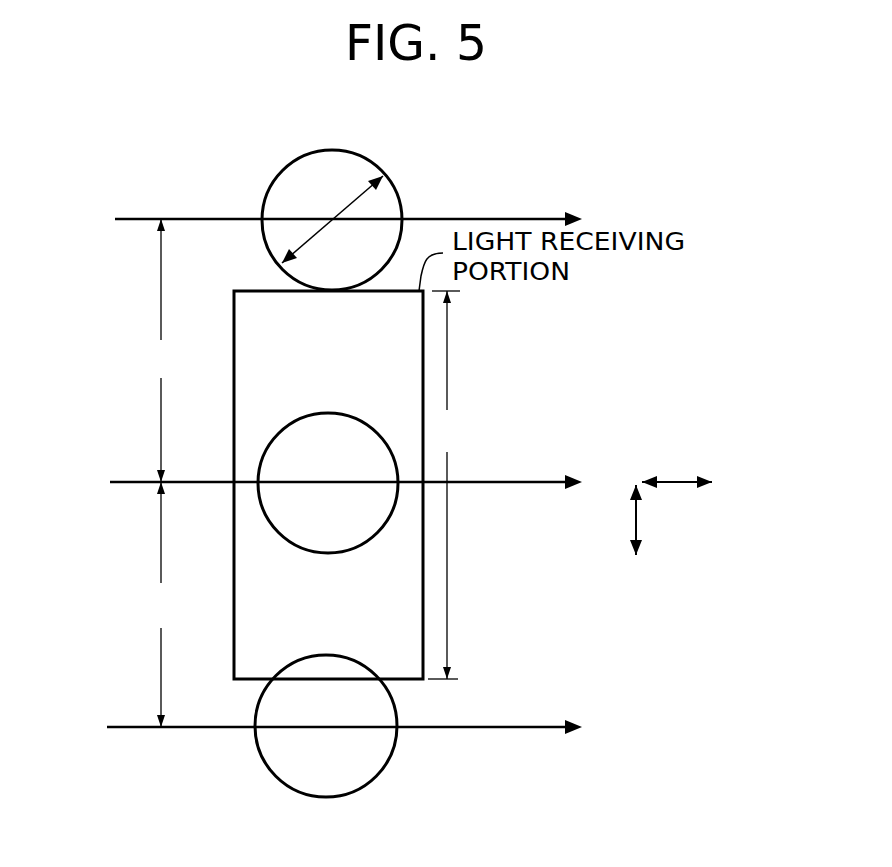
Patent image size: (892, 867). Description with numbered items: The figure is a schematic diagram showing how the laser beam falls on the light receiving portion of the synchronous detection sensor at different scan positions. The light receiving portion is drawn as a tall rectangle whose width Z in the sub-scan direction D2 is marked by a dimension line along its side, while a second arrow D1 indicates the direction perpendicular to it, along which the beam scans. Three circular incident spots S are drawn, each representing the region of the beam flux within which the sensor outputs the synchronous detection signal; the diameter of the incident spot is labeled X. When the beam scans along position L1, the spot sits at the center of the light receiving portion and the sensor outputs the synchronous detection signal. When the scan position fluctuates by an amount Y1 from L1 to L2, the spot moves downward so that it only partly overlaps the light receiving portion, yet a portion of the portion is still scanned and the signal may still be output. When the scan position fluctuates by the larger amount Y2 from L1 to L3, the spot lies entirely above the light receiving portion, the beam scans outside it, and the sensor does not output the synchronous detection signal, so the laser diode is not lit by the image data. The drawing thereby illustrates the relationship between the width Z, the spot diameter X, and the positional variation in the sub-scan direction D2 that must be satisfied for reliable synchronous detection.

The incident spot S is at (342, 150).
The diameter of the incident spot X is at (320, 229).
The scan position L1 is at (327, 483).
The scan position L2 is at (326, 728).
The scan position L3 is at (330, 220).
The fluctuation amount Y1 is at (161, 604).
The fluctuation amount Y2 is at (165, 350).
The width of the light receiving portion Z is at (444, 485).
The direction D1 is at (700, 483).
The sub-scan direction D2 is at (639, 537).